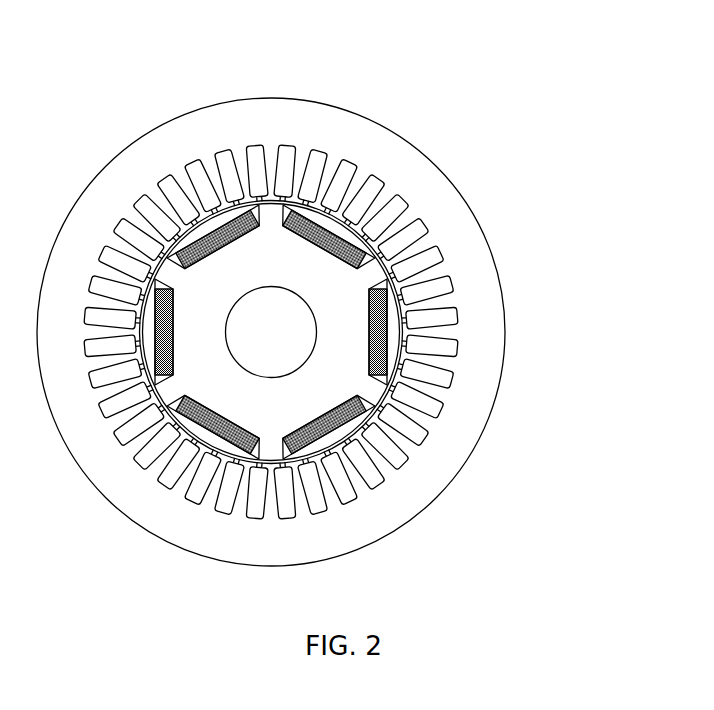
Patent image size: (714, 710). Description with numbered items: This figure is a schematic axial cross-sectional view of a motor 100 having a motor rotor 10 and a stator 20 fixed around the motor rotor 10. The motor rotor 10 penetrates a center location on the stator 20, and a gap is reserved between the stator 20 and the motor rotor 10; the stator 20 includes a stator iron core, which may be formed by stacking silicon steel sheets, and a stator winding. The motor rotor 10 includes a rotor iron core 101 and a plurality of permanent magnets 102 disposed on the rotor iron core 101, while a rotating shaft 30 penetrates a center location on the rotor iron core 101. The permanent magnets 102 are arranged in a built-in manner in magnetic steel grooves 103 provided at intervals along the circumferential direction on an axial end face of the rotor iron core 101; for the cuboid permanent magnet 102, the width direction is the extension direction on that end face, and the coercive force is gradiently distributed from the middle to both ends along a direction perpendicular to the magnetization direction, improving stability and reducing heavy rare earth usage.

The motor 100 is at (417, 108).
The stator 20 is at (453, 220).
The motor rotor 10 is at (401, 332).
The rotor iron core 101 is at (352, 338).
The permanent magnet 102 is at (388, 332).
The magnetic steel groove 103 is at (390, 381).
The rotating shaft 30 is at (273, 343).